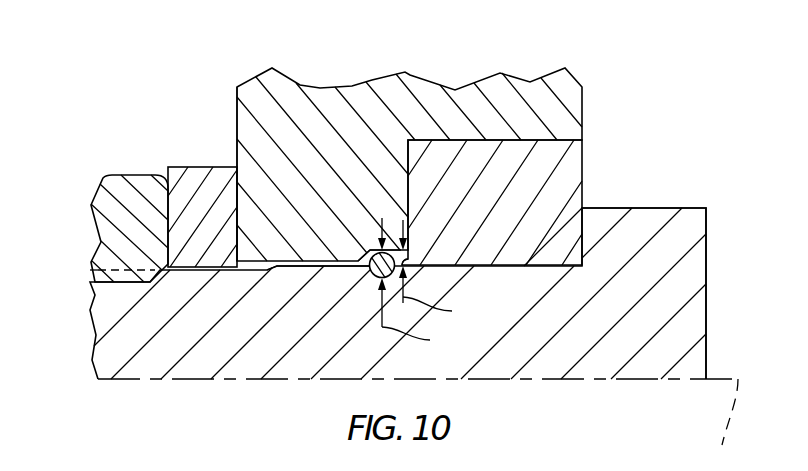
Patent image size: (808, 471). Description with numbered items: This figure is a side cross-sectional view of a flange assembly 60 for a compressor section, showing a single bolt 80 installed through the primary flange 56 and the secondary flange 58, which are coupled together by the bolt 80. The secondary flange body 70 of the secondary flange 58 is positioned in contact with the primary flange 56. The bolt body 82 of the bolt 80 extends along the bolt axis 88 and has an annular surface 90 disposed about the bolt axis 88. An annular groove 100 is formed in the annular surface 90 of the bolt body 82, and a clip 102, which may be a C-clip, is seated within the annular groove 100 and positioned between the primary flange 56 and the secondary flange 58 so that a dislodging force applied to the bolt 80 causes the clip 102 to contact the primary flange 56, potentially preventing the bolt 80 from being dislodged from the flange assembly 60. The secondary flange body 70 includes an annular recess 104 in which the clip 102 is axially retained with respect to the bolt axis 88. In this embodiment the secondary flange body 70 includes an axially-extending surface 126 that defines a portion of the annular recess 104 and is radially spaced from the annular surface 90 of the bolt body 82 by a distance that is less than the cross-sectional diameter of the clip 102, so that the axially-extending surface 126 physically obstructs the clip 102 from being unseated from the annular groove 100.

The primary flange 56 is at (598, 185).
The secondary flange 58 is at (333, 104).
The flange assembly 60 is at (449, 243).
The secondary flange body 70 is at (255, 123).
The bolt 80 is at (724, 315).
The bolt body 82 is at (690, 258).
The bolt axis 88 is at (724, 425).
The annular surface 90 is at (298, 261).
The annular groove 100 is at (358, 280).
The clip 102 is at (370, 277).
The annular recess 104 is at (357, 243).
The axially-extending surface 126 is at (411, 261).